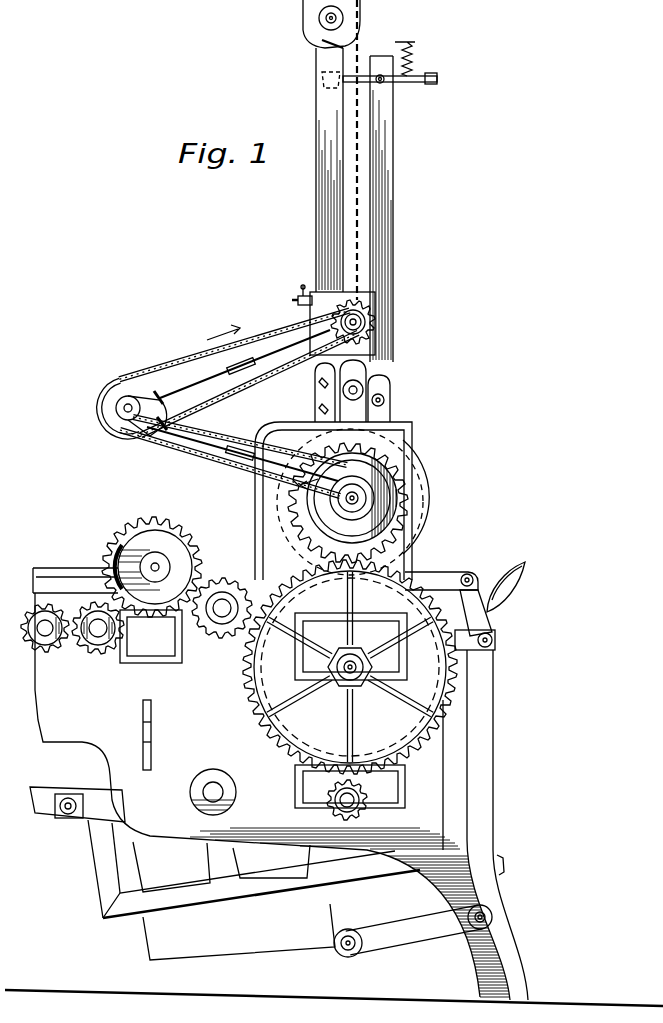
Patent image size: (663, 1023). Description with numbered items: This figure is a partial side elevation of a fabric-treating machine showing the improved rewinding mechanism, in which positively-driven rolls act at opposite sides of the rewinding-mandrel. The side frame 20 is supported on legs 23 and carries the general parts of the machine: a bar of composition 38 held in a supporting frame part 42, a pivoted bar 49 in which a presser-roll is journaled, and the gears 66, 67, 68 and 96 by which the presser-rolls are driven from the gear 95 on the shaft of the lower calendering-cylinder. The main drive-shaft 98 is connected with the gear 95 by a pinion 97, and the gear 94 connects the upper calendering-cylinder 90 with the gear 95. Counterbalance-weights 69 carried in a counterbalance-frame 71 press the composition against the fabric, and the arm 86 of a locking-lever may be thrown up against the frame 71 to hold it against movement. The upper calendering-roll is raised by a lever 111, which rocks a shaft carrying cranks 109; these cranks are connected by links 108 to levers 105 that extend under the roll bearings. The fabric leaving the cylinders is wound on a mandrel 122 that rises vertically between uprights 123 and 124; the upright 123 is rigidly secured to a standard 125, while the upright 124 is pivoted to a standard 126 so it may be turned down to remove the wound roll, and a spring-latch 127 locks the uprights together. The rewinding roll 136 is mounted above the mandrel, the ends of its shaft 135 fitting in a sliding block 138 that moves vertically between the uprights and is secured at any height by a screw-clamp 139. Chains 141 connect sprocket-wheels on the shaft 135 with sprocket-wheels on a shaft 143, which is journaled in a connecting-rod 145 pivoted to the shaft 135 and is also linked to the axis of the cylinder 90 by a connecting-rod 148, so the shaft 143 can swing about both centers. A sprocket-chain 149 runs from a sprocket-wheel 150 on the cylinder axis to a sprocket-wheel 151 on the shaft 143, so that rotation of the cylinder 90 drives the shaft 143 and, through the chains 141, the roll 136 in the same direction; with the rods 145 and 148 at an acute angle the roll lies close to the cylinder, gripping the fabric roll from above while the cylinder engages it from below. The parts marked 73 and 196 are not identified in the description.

The side frame 20 is at (190, 842).
The leg 23 is at (463, 877).
The bar of composition 38 is at (148, 646).
The bar-supporting frame part 42 is at (102, 805).
The pivoted bar 49 is at (78, 585).
The gear 66 is at (195, 554).
The gear 67 is at (64, 652).
The gear 68 is at (100, 654).
The counterbalance-weight 69 is at (277, 945).
The counterbalance-frame 71 is at (112, 898).
The bearing 73 is at (213, 782).
The arm 86 is at (417, 937).
The upper calendering-cylinder 90 is at (425, 505).
The gear 94 is at (472, 550).
The gear 95 is at (262, 690).
The gear 96 is at (221, 640).
The pinion 97 is at (362, 808).
The main drive-shaft 98 is at (340, 812).
The lever 105 is at (453, 573).
The link 108 is at (483, 614).
The crank 109 is at (497, 641).
The lever 111 is at (520, 584).
The mandrel 122 is at (365, 391).
The upright 123 is at (325, 217).
The upright 124 is at (383, 252).
The standard 125 is at (388, 402).
The standard 126 is at (318, 408).
The spring-latch 127 is at (428, 84).
The shaft 135 is at (362, 326).
The rewinding roll 136 is at (378, 301).
The sliding block 138 is at (306, 295).
The screw-clamp 139 is at (291, 302).
The chain 141 is at (168, 372).
The shaft 143 is at (108, 424).
The connecting-rod 145 is at (178, 392).
The connecting-rod 148 is at (215, 480).
The sprocket-chain 149 is at (150, 436).
The sprocket-wheel 150 is at (380, 492).
The sprocket-wheel 151 is at (116, 404).
The hub 196 is at (347, 503).